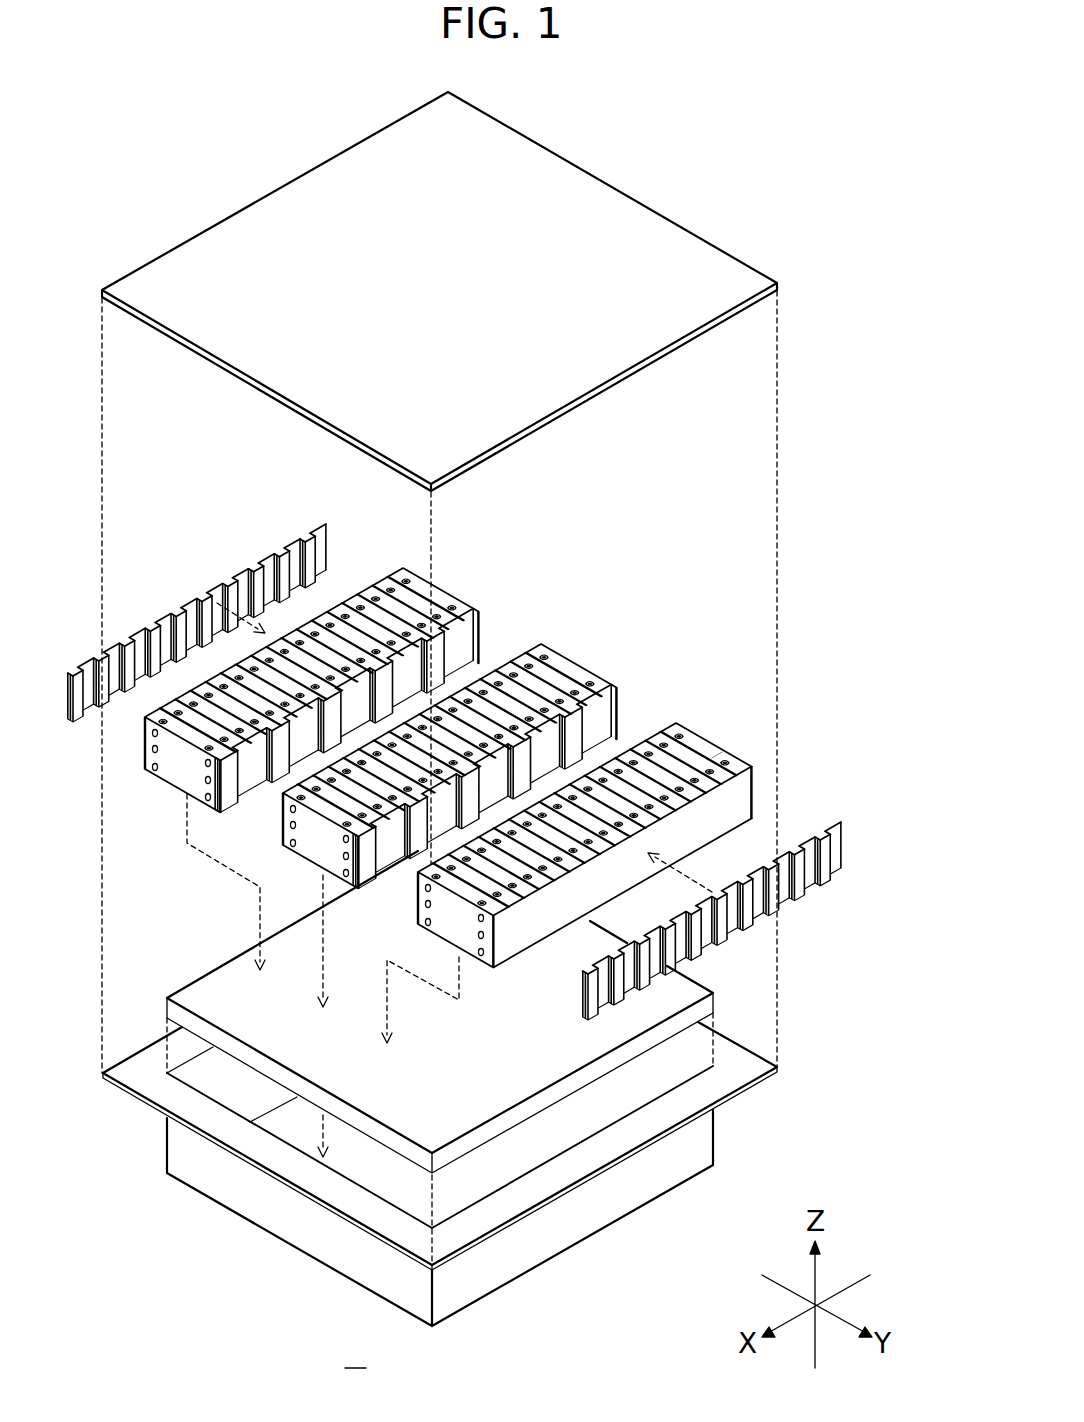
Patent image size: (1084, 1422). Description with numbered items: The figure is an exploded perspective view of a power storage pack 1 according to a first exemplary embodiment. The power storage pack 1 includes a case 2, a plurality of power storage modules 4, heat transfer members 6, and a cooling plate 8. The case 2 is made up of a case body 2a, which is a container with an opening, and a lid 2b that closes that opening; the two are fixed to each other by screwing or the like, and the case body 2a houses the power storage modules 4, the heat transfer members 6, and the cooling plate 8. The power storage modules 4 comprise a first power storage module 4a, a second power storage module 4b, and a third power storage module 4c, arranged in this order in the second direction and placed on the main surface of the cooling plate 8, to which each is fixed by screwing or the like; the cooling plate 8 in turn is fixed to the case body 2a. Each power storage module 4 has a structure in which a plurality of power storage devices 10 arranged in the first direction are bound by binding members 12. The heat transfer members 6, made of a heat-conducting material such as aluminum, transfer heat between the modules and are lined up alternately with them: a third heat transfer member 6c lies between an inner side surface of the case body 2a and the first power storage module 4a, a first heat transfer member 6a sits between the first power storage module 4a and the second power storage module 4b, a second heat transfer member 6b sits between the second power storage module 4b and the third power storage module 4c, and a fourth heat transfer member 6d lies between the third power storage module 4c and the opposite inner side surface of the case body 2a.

The power storage pack 1 is at (355, 1353).
The case 2 is at (437, 709).
The case body 2a is at (167, 1148).
The lid 2b is at (150, 262).
The power storage module 4 is at (468, 732).
The first power storage module 4a is at (456, 578).
The second power storage module 4b is at (593, 653).
The third power storage module 4c is at (604, 806).
The heat transfer member 6 is at (487, 745).
The first heat transfer member 6a is at (484, 619).
The second heat transfer member 6b is at (620, 717).
The third heat transfer member 6c is at (320, 530).
The fourth heat transfer member 6d is at (850, 840).
The cooling plate 8 is at (713, 1003).
The power storage device 10 is at (712, 758).
The binding member 12 is at (622, 867).